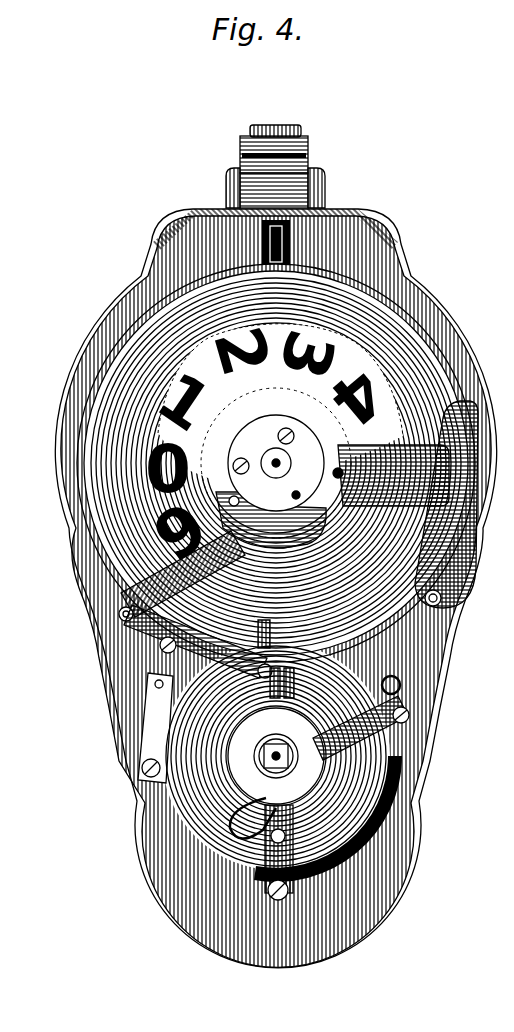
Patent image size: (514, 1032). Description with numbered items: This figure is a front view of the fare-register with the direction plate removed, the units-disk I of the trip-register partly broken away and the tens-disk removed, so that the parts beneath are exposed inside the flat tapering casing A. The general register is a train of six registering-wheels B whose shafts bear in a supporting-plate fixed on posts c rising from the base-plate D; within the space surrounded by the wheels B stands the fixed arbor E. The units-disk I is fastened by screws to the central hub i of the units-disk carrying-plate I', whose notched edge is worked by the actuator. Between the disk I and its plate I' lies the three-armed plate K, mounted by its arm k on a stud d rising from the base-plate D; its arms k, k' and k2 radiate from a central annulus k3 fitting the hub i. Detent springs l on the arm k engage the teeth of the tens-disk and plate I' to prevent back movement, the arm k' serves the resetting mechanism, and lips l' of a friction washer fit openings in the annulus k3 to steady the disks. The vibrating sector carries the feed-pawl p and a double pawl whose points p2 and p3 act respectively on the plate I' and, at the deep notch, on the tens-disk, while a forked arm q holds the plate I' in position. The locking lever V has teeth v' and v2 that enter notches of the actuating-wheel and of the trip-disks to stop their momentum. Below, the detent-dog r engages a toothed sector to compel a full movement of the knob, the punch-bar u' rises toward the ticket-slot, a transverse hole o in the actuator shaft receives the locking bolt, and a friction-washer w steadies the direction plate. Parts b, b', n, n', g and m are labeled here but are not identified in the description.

The casing A is at (275, 588).
The registering-wheels B is at (276, 463).
The posts c is at (252, 397).
The pinion b is at (425, 378).
The pin b' is at (337, 475).
The post or stud d is at (468, 615).
The arbor E is at (265, 452).
The central hub i is at (299, 483).
The three-armed plate K is at (393, 475).
The arm k is at (335, 410).
The arm k' is at (252, 307).
The arm k2 is at (183, 574).
The central ring or annulus k3 is at (317, 508).
The detent dogs or springs l is at (446, 504).
The lips l' is at (271, 520).
The units-disk I is at (378, 556).
The units-disk carrying-plate I' is at (318, 540).
The lever V is at (139, 568).
The tooth v' is at (296, 149).
The tooth v2 is at (111, 606).
The punch or cutter-bar u' is at (292, 205).
The pin n is at (347, 605).
The pin n' is at (387, 596).
The spring g is at (298, 608).
The feed-pawl p is at (198, 641).
The actuating-point p2 is at (267, 625).
The actuating-point p3 is at (293, 677).
The barrel m is at (284, 764).
The transverse hole o is at (235, 777).
The forked arm q is at (276, 756).
The base-plate D is at (337, 788).
The shifting detent-dog r is at (339, 773).
The spring or friction-washer w is at (155, 728).